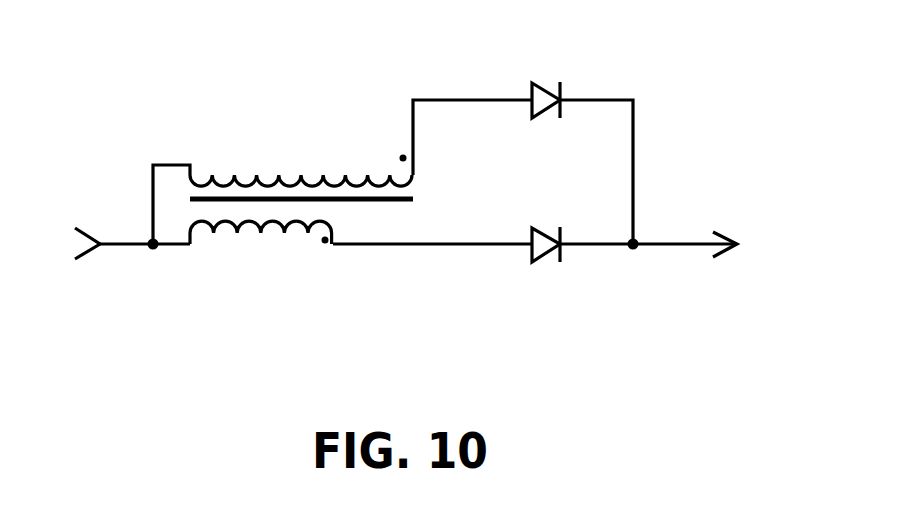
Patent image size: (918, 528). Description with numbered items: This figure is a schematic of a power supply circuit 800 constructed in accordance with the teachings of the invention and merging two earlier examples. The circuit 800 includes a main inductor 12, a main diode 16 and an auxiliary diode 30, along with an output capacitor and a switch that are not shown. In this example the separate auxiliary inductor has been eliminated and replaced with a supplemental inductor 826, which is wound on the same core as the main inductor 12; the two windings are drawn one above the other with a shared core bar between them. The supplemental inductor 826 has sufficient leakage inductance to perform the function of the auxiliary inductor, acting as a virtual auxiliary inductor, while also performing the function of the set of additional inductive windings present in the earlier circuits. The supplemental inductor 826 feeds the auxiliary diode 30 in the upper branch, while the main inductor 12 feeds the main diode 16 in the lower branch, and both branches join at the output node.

The power supply circuit 800 is at (212, 363).
The supplemental inductor 826 is at (230, 173).
The main inductor 12 is at (295, 238).
The auxiliary diode 30 is at (538, 98).
The main diode 16 is at (543, 242).